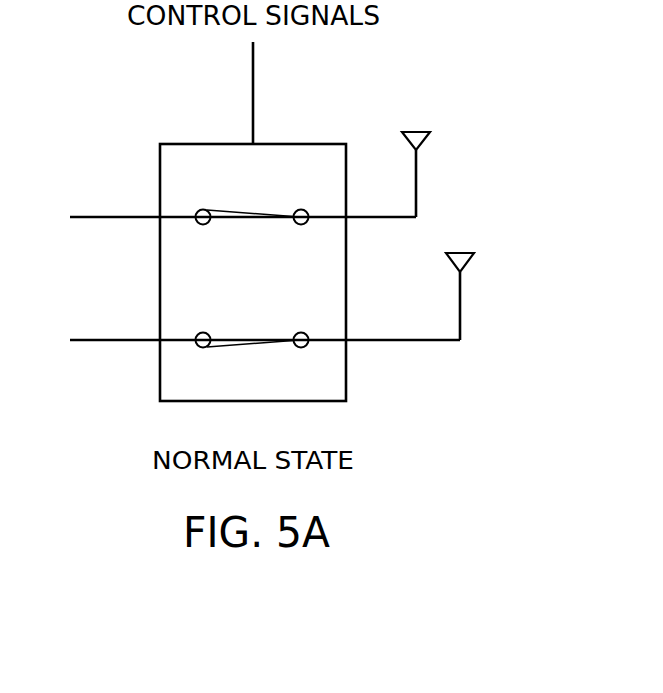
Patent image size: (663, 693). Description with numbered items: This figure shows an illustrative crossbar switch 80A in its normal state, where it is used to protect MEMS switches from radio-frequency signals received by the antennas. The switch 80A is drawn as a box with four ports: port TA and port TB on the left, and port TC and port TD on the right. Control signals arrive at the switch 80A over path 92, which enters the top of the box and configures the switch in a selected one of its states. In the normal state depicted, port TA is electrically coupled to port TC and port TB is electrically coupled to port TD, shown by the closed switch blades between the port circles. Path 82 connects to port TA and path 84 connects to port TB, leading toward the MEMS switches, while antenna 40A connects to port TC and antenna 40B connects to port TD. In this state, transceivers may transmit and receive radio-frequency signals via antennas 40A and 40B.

The path 92 is at (255, 68).
The switch 80A is at (305, 143).
The path 82 is at (103, 216).
The path 84 is at (103, 338).
The antenna 40A is at (415, 130).
The antenna 40B is at (461, 252).